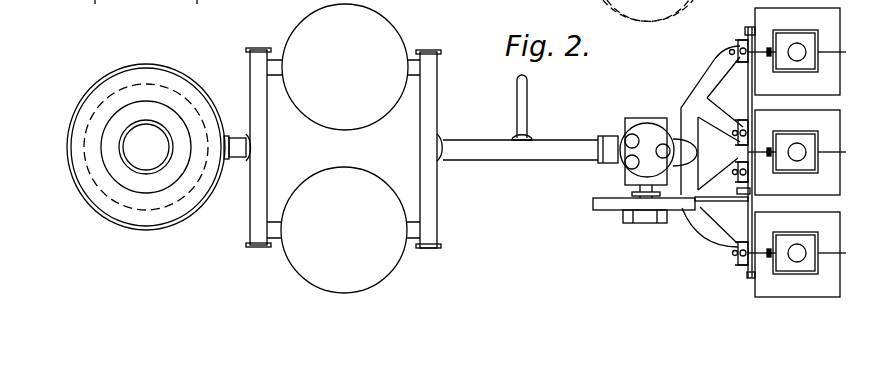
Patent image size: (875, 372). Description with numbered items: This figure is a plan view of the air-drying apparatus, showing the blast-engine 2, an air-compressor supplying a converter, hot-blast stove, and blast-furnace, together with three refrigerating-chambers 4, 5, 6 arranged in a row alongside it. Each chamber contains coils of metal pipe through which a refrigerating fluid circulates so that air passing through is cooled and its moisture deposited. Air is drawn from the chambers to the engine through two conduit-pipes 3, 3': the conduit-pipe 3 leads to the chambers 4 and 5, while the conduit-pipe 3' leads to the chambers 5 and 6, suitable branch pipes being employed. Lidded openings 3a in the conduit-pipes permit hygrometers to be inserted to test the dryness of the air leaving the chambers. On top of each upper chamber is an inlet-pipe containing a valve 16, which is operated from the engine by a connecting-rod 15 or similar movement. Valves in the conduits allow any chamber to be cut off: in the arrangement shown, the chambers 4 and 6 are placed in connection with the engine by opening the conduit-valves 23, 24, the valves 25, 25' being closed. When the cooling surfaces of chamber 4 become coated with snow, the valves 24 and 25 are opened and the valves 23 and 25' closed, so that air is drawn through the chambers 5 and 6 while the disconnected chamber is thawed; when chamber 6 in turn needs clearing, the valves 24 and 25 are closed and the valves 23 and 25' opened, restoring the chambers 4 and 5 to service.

The blast-engine 2 is at (658, 151).
The conduit-pipe 3 is at (708, 227).
The conduit-pipe 3' is at (703, 120).
The openings 3a is at (729, 52).
The refrigerating-chamber 4 is at (794, 255).
The refrigerating-chamber 5 is at (794, 152).
The refrigerating-chamber 6 is at (794, 51).
The connecting-rod 15 is at (708, 202).
The valve 16 is at (842, 155).
The conduit-valve 23 is at (742, 268).
The conduit-valve 24 is at (741, 41).
The valve 25 is at (727, 167).
The valve 25' is at (728, 119).